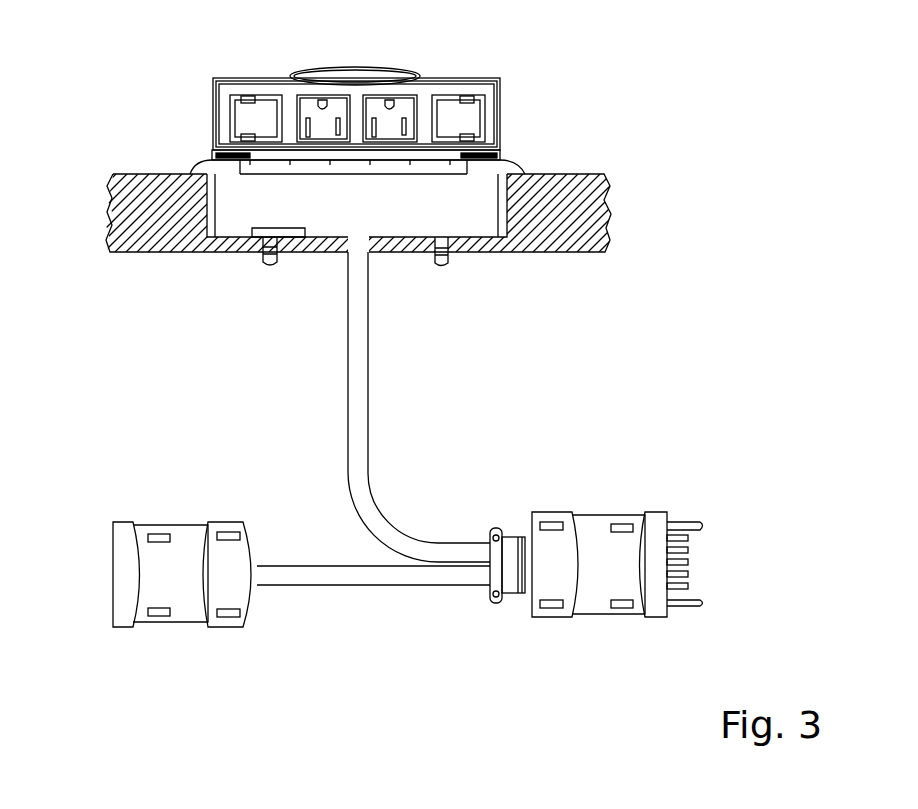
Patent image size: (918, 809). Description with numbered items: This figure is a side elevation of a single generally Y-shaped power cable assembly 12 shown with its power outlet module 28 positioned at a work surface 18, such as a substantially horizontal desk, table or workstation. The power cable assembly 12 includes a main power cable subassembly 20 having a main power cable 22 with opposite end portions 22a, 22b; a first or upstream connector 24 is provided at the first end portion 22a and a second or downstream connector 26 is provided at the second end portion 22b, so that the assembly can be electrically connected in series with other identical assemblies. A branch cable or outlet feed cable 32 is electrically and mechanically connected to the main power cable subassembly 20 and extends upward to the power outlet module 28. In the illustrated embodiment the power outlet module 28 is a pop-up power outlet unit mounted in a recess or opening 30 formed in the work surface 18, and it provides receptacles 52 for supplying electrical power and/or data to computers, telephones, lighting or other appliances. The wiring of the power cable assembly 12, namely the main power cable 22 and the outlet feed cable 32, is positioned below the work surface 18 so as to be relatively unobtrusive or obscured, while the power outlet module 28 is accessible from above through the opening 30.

The power cable assembly 12 is at (580, 383).
The work surface 18 is at (580, 174).
The main power cable subassembly 20 is at (655, 648).
The main power cable 22 is at (355, 577).
The first end portion 22a is at (275, 540).
The second end portion 22b is at (472, 600).
The first connector 24 is at (170, 522).
The second connector 26 is at (600, 512).
The power outlet module 28 is at (550, 78).
The opening 30 is at (503, 210).
The outlet feed cable 32 is at (362, 368).
The receptacles 52 is at (306, 104).